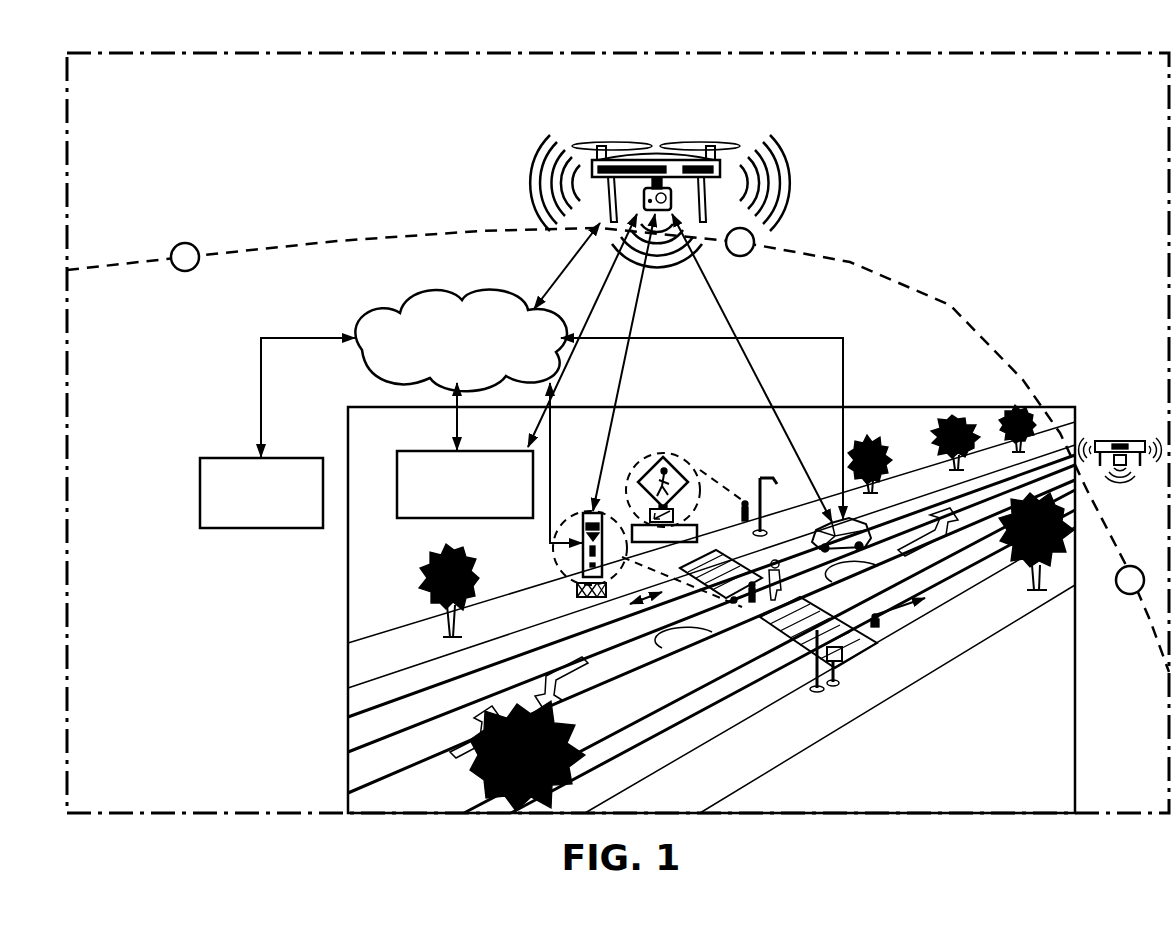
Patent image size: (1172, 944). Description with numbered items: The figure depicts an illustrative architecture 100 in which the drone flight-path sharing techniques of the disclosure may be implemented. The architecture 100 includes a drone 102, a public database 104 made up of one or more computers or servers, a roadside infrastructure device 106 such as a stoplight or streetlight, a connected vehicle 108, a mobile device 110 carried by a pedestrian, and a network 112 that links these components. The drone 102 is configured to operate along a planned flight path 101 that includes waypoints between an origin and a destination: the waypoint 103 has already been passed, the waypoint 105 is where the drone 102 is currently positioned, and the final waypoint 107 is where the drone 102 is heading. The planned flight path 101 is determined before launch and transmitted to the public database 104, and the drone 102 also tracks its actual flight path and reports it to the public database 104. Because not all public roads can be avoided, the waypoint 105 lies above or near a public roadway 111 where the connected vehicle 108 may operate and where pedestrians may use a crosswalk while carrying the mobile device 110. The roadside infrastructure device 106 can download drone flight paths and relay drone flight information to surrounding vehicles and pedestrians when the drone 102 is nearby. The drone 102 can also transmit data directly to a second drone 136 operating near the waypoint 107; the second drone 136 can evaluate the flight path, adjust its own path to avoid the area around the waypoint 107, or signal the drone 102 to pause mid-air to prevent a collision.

The architecture 100 is at (183, 112).
The planned flight path 101 is at (337, 240).
The drone 102 is at (655, 158).
The waypoint 103 is at (185, 243).
The public database 104 is at (228, 457).
The waypoint 105 is at (740, 256).
The roadside infrastructure device 106 is at (668, 447).
The waypoint 107 is at (1130, 594).
The connected vehicle 108 is at (830, 521).
The mobile device 110 is at (480, 519).
The roadway 111 is at (422, 700).
The network 112 is at (401, 304).
The second drone 136 is at (1120, 440).